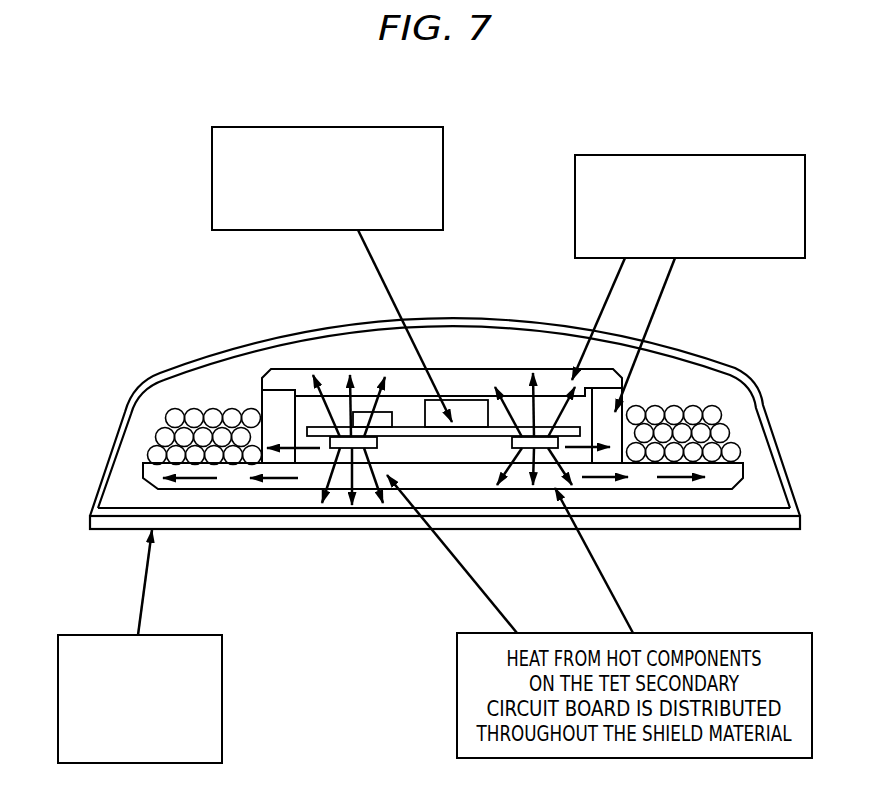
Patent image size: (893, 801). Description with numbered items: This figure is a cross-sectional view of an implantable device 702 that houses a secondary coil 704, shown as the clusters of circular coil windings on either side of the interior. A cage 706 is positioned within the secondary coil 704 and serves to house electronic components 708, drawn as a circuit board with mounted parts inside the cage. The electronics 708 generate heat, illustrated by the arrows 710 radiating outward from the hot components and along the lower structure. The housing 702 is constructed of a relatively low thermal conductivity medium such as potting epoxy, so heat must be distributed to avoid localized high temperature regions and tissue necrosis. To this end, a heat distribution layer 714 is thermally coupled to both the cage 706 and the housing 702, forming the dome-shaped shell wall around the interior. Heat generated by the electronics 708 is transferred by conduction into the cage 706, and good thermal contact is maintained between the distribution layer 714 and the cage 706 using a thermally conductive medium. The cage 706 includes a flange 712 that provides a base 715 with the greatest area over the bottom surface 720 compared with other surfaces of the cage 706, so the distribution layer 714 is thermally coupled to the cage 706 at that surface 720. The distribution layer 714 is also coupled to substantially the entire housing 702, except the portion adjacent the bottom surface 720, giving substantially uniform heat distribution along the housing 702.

The implantable device housing 702 is at (102, 635).
The secondary coil 704 is at (689, 394).
The cage 706 is at (575, 225).
The electronic components 708 is at (212, 185).
The arrows 710 is at (577, 483).
The flange 712 is at (228, 477).
The heat distribution layer 714 is at (106, 466).
The base 715 is at (435, 475).
The bottom surface 720 is at (702, 508).